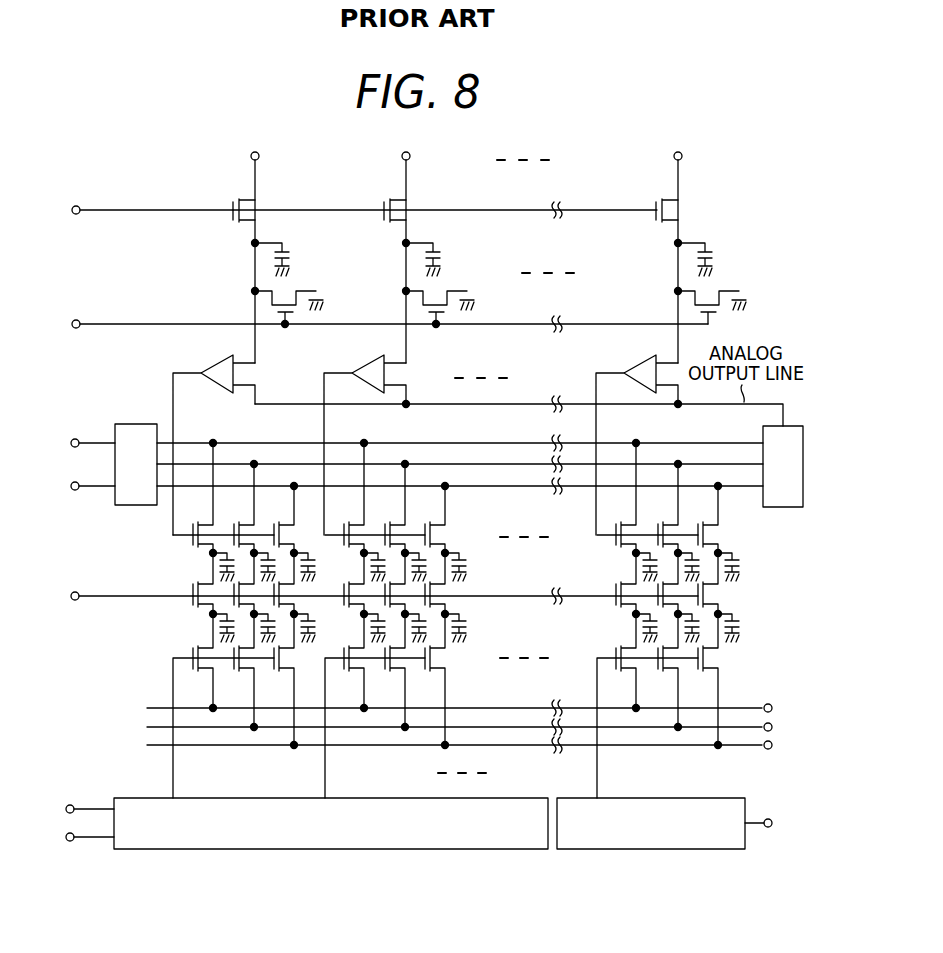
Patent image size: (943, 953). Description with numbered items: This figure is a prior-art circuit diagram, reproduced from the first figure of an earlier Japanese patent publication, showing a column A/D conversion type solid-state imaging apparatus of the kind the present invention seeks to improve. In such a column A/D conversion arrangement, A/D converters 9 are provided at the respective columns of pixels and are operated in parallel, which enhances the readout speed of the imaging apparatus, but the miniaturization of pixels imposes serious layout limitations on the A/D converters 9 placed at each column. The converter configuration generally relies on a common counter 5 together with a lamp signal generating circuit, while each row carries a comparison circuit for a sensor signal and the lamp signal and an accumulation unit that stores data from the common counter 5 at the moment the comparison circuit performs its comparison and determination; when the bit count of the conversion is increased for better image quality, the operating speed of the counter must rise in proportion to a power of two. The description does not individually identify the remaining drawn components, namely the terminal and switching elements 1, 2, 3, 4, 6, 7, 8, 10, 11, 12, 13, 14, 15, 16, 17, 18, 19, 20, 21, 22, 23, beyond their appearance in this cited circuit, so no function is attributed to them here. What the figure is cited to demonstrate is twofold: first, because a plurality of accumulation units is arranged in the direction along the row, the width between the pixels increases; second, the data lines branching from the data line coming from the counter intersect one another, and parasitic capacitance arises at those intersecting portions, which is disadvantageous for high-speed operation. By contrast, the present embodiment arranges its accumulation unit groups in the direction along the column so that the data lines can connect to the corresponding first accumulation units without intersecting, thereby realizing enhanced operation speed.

The power supply terminal 1 is at (485, 252).
The reset pulse input terminal 2 is at (108, 208).
The reset MOS transistor 3 is at (450, 191).
The capacitor 4 is at (498, 252).
The common counter 5 is at (137, 423).
The input terminal 6 is at (95, 442).
The input terminal 7 is at (95, 489).
The signal lines 8 is at (490, 500).
The A/D converter 9 is at (785, 509).
The amplifier 10 is at (427, 438).
The transfer MOS transistor 11 is at (451, 498).
The storage capacitor 12 is at (463, 541).
The transfer pulse input terminal 13 is at (95, 594).
The transfer MOS transistor 14 is at (462, 599).
The storage capacitor 15 is at (486, 653).
The horizontal shift register 16 is at (372, 851).
The readout MOS transistor 17 is at (455, 701).
The output terminals 18 is at (740, 690).
The input terminal 19 is at (88, 807).
The input terminal 20 is at (88, 841).
The input terminal 21 is at (760, 830).
The reset MOS transistor 22 is at (510, 296).
The reset pulse input terminal 23 is at (109, 323).